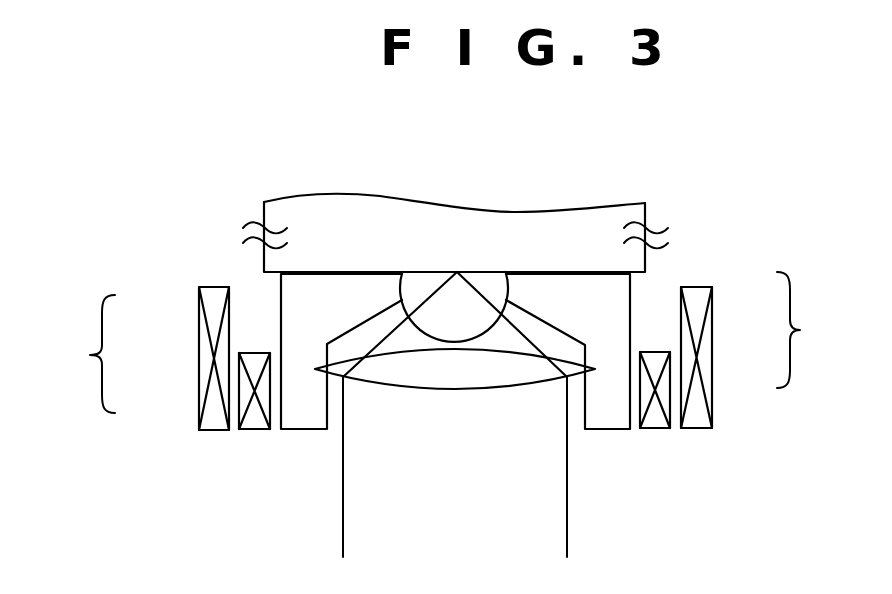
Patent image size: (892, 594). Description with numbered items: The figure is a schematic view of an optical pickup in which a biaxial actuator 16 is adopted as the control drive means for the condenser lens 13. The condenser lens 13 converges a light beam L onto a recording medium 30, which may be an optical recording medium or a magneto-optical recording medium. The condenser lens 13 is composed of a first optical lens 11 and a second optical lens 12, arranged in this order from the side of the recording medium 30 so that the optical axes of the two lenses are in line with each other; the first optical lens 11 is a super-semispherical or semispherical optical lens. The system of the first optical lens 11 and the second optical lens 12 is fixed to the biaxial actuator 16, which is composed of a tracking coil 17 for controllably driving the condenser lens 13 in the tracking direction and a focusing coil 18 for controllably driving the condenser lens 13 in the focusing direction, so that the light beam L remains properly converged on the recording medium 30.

The recording medium 30 is at (570, 224).
The first optical lens 11 is at (490, 293).
The second optical lens 12 is at (526, 371).
The condenser lens 13 is at (808, 330).
The biaxial actuator 16 is at (82, 354).
The tracking coil 17 is at (202, 328).
The focusing coil 18 is at (250, 385).
The light beam L is at (567, 495).